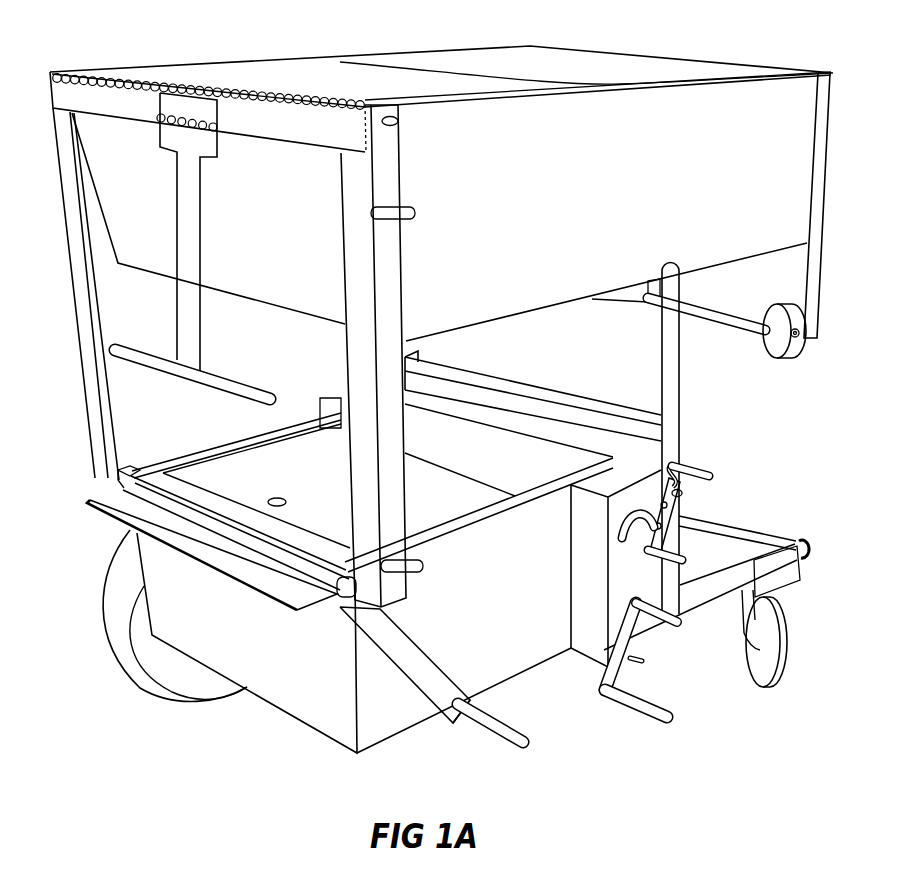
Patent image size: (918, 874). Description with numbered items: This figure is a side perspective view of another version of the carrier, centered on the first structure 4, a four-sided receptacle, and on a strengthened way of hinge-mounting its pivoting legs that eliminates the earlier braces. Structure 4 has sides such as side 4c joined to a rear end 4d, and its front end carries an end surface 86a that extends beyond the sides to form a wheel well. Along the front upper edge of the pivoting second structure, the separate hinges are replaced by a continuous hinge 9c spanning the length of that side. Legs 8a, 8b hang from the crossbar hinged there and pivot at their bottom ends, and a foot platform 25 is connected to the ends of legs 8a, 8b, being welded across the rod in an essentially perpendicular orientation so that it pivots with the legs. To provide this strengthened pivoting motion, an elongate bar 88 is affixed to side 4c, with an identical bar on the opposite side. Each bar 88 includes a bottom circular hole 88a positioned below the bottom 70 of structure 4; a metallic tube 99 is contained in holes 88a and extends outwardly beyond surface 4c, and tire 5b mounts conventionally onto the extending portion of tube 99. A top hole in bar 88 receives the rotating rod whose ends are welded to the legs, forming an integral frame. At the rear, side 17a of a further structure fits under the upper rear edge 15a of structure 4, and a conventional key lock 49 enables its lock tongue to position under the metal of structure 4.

The first structure 4 is at (553, 177).
The beaded edge strip 9c is at (78, 72).
The leg 8a is at (88, 357).
The leg 8b is at (395, 500).
The side 17a is at (463, 433).
The upper rear edge 15a is at (578, 443).
The key lock 49 is at (277, 498).
The foot platform 25 is at (118, 490).
The tire 5b is at (112, 572).
The rear end 4d is at (282, 678).
The bottom 70 is at (373, 748).
The side 4c is at (475, 605).
The elongate bar 88 is at (432, 680).
The bottom circular hole 88a is at (458, 715).
The metallic tube 99 is at (497, 725).
The end surface 86a is at (640, 580).